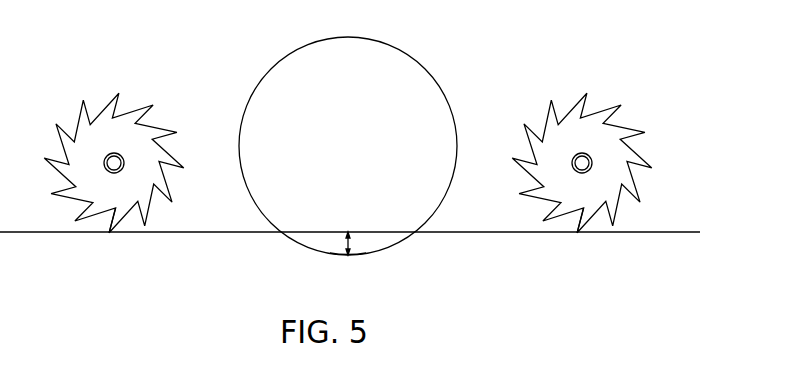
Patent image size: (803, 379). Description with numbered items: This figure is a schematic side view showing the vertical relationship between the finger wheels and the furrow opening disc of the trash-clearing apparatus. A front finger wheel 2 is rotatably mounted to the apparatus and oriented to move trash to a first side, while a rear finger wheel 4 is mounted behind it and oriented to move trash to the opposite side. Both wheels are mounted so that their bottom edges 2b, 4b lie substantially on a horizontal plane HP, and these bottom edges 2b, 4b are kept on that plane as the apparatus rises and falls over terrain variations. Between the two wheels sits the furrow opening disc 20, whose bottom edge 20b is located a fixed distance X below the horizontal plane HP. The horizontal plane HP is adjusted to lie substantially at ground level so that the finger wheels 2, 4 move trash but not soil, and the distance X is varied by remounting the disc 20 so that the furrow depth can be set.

The front finger wheel 2 is at (114, 93).
The bottom edge of front finger wheel 2b is at (113, 233).
The rear finger wheel 4 is at (582, 93).
The bottom edge of rear finger wheel 4b is at (581, 233).
The furrow opening disc 20 is at (413, 55).
The bottom edge of disc 20b is at (348, 258).
The distance X is at (350, 232).
The horizontal plane HP is at (366, 233).